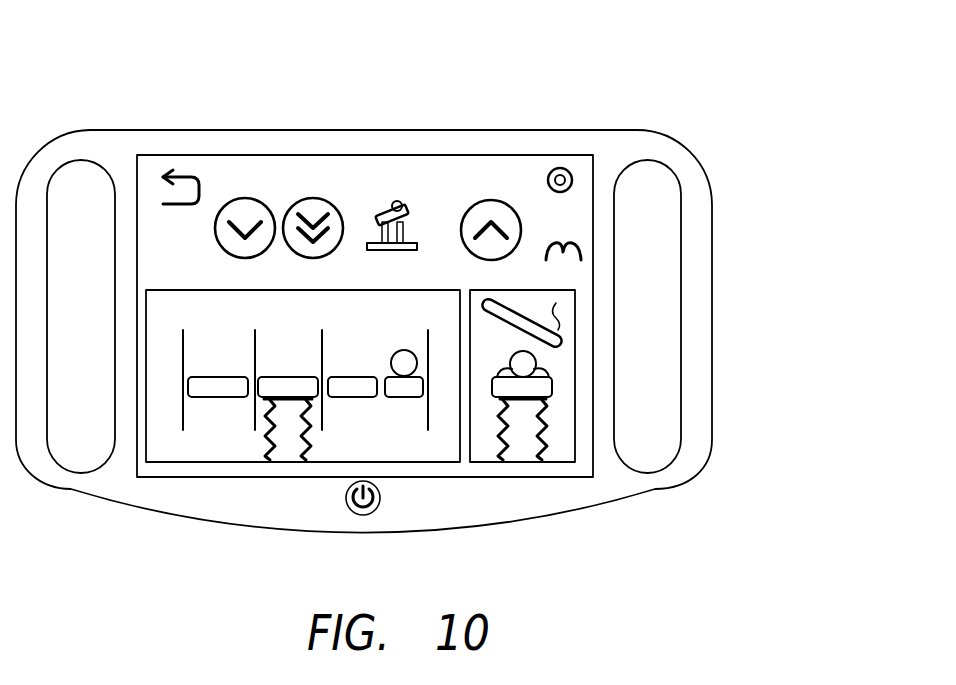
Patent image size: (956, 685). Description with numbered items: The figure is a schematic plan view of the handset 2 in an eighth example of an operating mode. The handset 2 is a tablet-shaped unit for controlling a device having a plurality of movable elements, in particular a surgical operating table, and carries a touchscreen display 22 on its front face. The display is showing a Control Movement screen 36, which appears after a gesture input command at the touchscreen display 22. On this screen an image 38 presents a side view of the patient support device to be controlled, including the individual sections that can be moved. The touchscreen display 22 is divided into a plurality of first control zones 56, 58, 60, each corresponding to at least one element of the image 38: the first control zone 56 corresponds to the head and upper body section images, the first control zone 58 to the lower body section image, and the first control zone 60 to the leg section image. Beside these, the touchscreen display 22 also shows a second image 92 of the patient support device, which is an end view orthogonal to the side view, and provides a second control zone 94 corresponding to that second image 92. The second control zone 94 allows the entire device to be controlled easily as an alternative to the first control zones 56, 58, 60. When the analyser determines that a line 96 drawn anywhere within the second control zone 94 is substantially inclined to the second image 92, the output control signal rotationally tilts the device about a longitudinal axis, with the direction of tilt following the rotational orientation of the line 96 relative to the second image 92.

The handset 2 is at (693, 112).
The touchscreen display 22 is at (355, 169).
The Control Movement screen 36 is at (580, 478).
The image 38 is at (413, 397).
The first control zone 56 is at (340, 412).
The first control zone 58 is at (300, 424).
The first control zone 60 is at (223, 416).
The second image 92 is at (494, 396).
The second control zone 94 is at (558, 313).
The line 96 is at (562, 343).